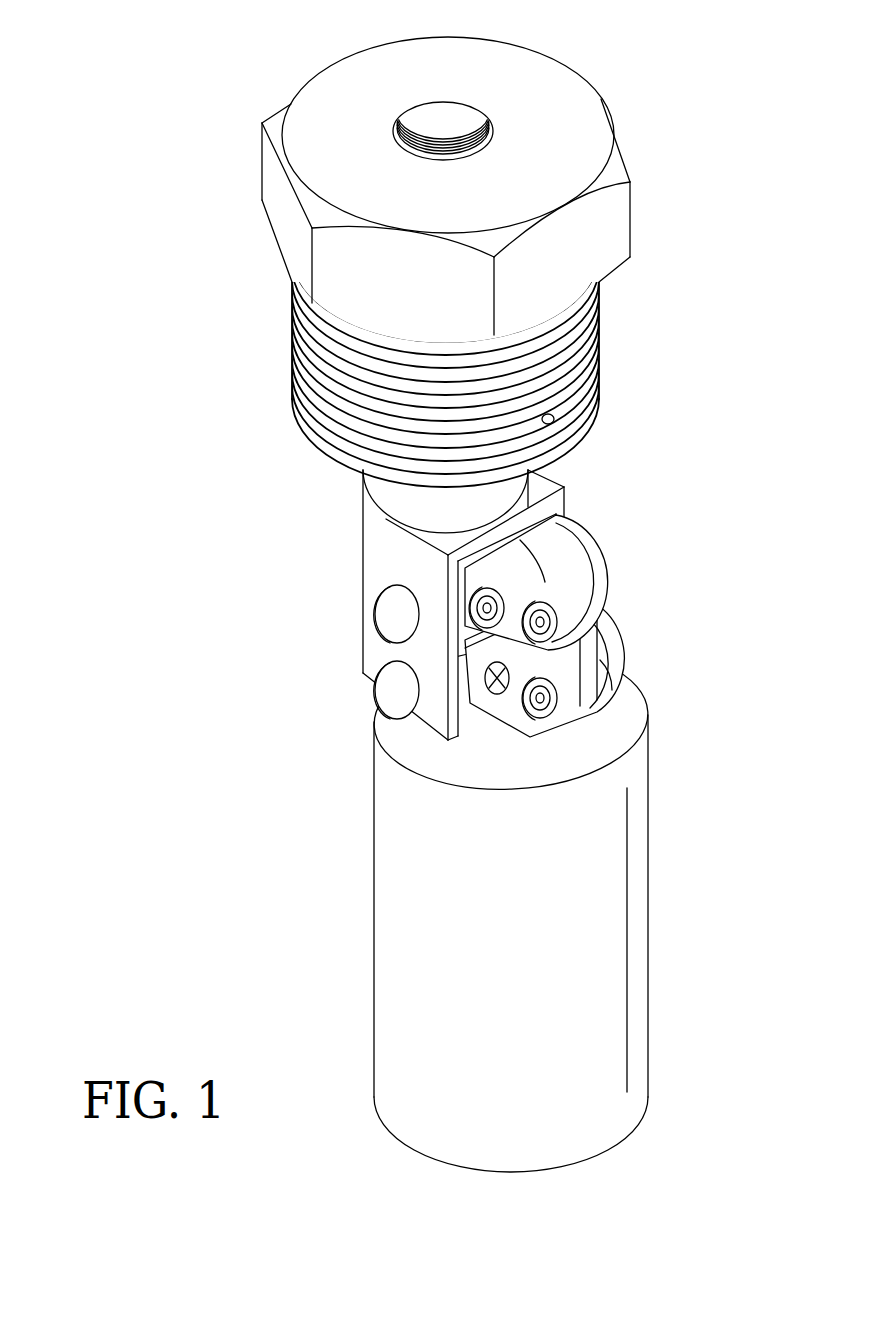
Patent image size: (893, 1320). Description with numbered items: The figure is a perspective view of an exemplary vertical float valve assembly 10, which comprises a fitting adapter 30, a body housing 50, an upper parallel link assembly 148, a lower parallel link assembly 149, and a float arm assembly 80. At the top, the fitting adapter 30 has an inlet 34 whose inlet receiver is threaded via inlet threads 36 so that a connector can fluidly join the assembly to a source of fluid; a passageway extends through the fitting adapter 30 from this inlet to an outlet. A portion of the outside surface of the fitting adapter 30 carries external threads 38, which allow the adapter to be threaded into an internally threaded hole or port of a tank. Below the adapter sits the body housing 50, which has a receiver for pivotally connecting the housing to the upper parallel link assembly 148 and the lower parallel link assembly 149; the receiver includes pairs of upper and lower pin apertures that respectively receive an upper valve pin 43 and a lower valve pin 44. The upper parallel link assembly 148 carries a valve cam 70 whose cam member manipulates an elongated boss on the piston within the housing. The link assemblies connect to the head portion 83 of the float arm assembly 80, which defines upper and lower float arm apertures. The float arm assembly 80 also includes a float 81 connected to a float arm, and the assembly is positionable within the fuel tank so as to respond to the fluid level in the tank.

The vertical float valve assembly 10 is at (133, 568).
The fitting adapter 30 is at (578, 267).
The inlet 34 is at (468, 108).
The inlet threads 36 is at (450, 128).
The external threads 38 is at (592, 365).
The upper valve pin 43 is at (393, 615).
The lower valve pin 44 is at (390, 693).
The body housing 50 is at (552, 508).
The valve cam 70 is at (518, 568).
The float arm assembly 80 is at (677, 728).
The float 81 is at (637, 1048).
The head portion 83 is at (588, 638).
The upper parallel link assembly 148 is at (633, 590).
The lower parallel link assembly 149 is at (650, 690).